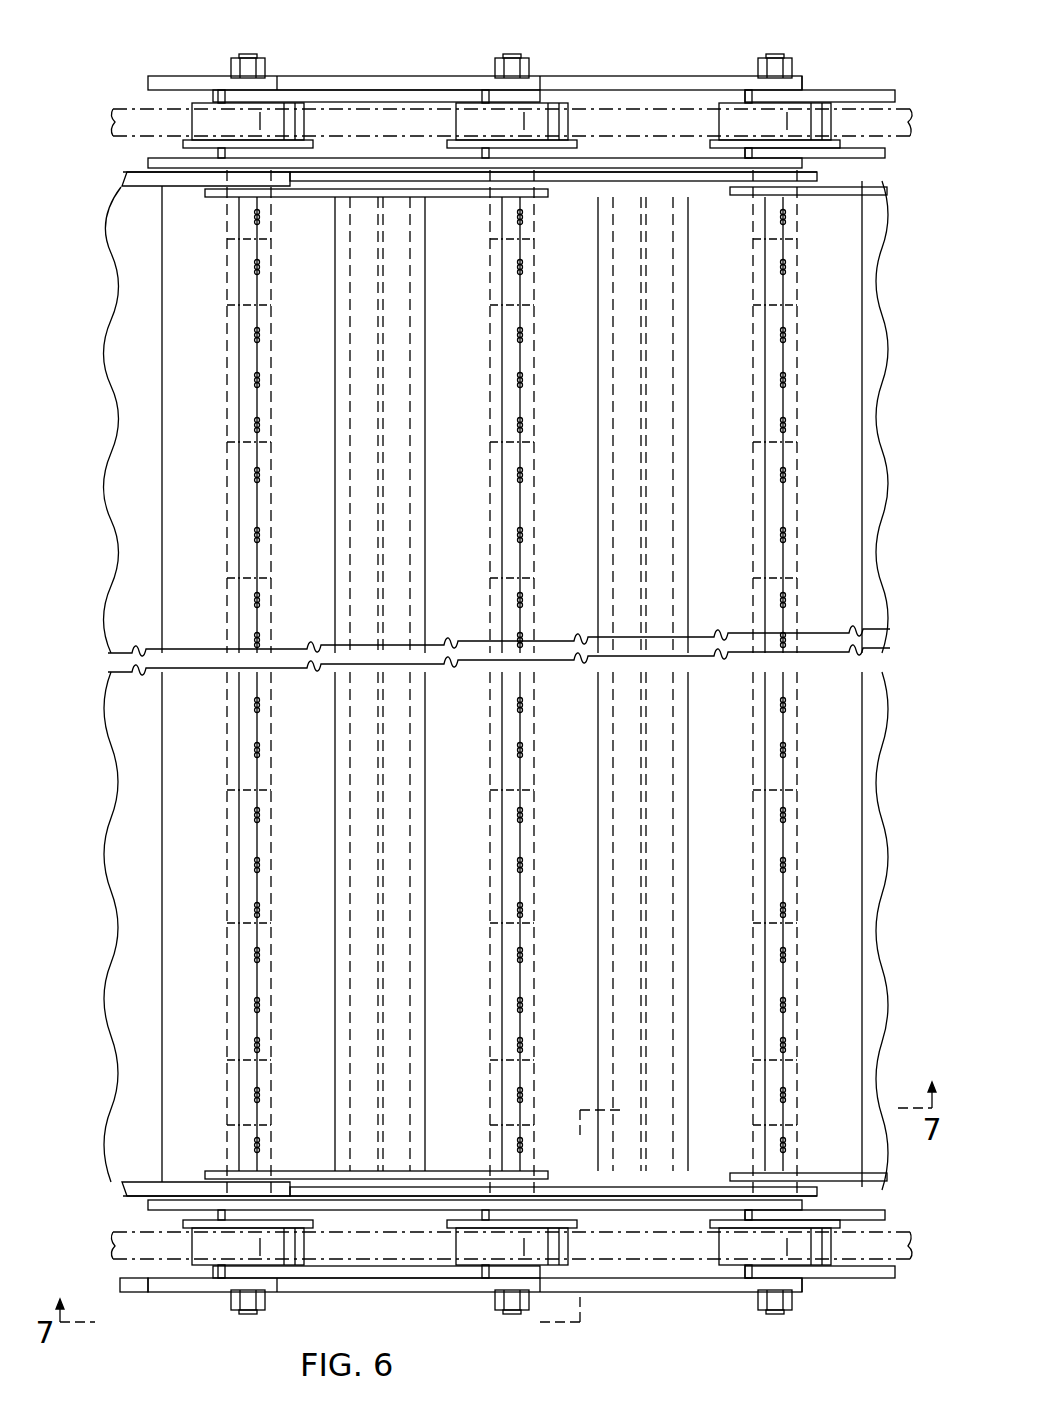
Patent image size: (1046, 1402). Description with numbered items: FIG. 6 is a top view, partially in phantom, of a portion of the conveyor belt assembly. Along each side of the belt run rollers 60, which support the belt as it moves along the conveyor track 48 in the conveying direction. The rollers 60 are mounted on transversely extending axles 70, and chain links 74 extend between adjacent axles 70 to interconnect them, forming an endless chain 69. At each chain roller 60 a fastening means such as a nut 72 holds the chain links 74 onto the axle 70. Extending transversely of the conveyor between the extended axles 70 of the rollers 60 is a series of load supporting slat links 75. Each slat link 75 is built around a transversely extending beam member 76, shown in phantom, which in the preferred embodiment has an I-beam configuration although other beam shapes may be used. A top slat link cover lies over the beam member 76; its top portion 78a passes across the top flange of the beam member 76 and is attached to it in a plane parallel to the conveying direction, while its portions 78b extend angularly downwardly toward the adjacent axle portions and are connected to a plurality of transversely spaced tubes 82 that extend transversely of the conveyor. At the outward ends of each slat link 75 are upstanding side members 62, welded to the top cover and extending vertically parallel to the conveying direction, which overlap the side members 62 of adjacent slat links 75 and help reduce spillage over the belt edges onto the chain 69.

The conveyor track 48 is at (112, 138).
The roller 60 is at (293, 120).
The side member 62 is at (137, 184).
The endless chain 69 is at (700, 62).
The axle 70 is at (250, 56).
The nut 72 is at (232, 68).
The chain link 74 is at (440, 90).
The slat link 75 is at (480, 370).
The transverse beam member 76 is at (385, 1045).
The top portion of top slat link cover 78a is at (397, 535).
The angular portion of top slat link cover 78b is at (322, 478).
The tube 82 is at (246, 334).